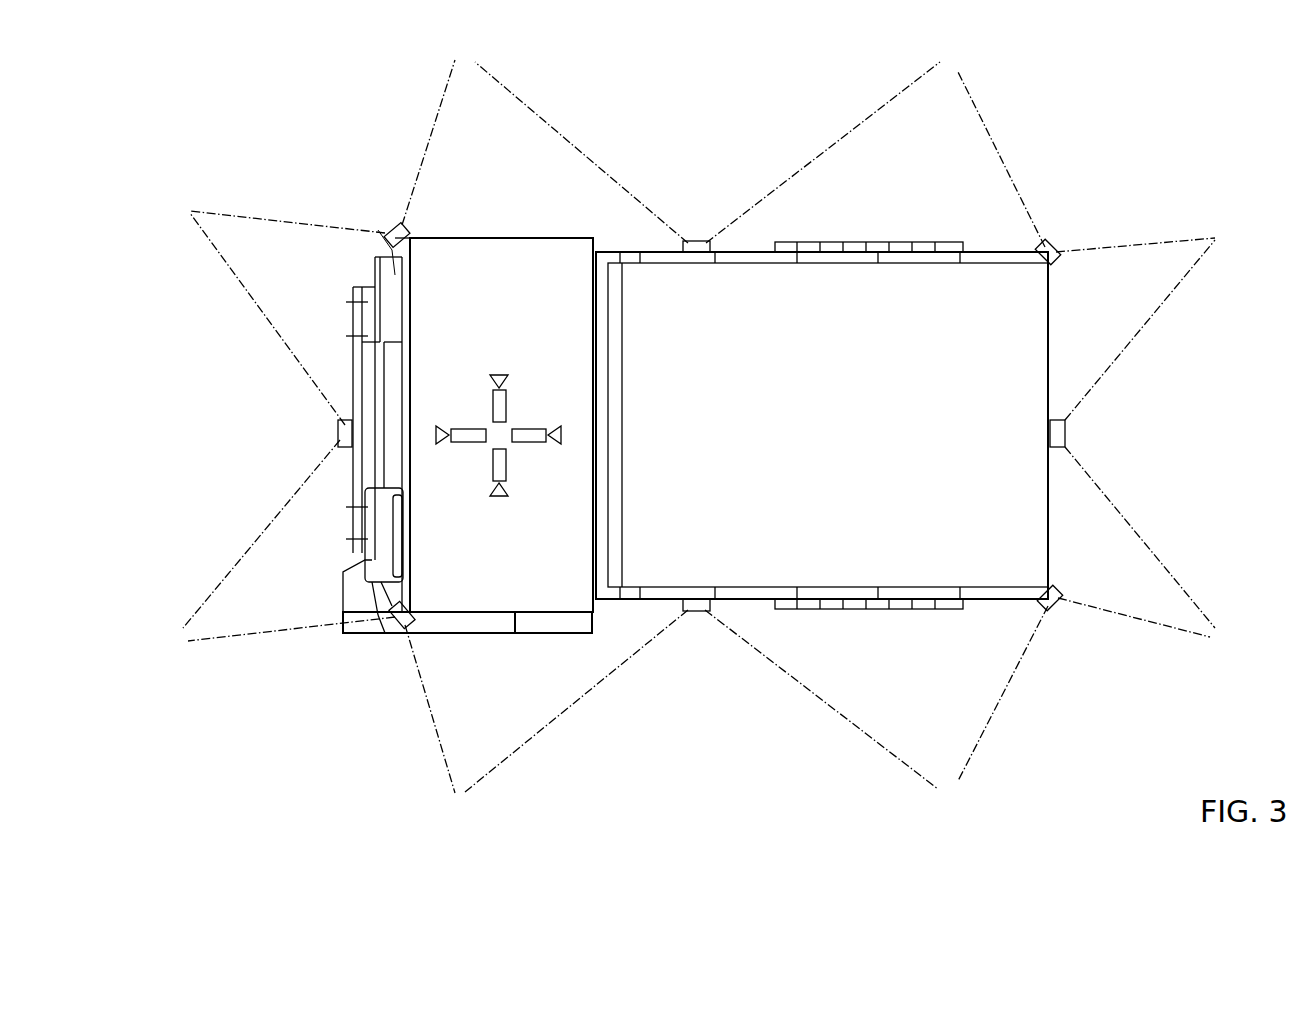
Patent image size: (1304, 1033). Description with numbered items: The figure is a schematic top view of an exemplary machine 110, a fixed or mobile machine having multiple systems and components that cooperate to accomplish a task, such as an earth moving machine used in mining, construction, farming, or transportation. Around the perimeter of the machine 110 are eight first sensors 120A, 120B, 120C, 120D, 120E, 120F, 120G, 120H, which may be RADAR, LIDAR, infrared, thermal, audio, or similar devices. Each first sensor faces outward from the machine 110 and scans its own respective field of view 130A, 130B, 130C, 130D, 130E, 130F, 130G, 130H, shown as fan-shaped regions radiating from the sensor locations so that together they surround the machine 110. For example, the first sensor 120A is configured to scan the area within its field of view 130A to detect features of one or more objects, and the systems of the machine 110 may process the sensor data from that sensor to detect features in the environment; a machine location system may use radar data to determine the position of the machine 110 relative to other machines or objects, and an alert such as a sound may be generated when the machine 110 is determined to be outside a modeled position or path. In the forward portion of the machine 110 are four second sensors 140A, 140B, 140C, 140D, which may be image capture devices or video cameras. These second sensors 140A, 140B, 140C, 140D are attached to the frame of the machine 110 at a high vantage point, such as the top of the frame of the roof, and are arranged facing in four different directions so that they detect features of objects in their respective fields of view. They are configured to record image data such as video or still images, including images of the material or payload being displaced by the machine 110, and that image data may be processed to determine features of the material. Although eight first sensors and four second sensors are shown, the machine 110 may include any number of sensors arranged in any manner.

The machine 110 is at (740, 431).
The first sensor 120A is at (342, 415).
The first sensor 120B is at (410, 235).
The first sensor 120C is at (683, 246).
The first sensor 120D is at (1040, 246).
The first sensor 120E is at (1057, 420).
The first sensor 120F is at (1062, 592).
The first sensor 120G is at (712, 605).
The first sensor 120H is at (412, 622).
The field of view 130A is at (242, 303).
The field of view 130B is at (425, 158).
The field of view 130C is at (568, 140).
The field of view 130D is at (1006, 142).
The field of view 130E is at (1158, 318).
The field of view 130F is at (1167, 632).
The field of view 130G is at (825, 708).
The field of view 130H is at (437, 740).
The second sensor 140A is at (468, 445).
The second sensor 140B is at (493, 385).
The second sensor 140C is at (530, 425).
The second sensor 140D is at (506, 460).